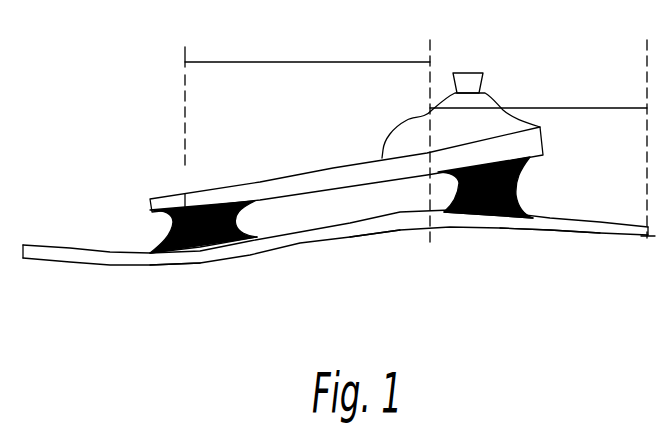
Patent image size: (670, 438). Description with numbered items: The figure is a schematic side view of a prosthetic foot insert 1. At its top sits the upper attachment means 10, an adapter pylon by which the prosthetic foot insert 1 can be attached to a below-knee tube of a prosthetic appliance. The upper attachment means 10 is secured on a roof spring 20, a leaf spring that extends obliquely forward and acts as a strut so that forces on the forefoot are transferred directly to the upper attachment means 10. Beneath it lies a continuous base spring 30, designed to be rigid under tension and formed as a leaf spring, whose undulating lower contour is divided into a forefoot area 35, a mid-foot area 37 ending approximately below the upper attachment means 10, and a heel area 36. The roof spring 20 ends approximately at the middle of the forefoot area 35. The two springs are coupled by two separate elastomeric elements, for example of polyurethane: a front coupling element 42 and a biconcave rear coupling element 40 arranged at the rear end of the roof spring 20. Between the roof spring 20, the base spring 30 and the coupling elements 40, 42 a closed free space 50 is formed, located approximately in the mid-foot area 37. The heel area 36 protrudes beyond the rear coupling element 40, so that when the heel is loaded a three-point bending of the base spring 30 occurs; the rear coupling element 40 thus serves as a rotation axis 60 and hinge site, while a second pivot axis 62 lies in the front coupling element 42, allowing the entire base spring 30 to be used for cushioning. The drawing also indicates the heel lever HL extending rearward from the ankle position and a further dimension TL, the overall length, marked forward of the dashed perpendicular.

The prosthetic foot insert 1 is at (214, 109).
The upper attachment means 10 is at (490, 95).
The roof spring 20 is at (317, 173).
The base spring 30 is at (350, 228).
The forefoot area 35 is at (188, 290).
The heel area 36 is at (552, 257).
The mid-foot area 37 is at (374, 254).
The rear coupling element 40 is at (515, 183).
The front coupling element 42 is at (167, 230).
The free space 50 is at (399, 195).
The rotation axis 60 is at (488, 218).
The second pivot axis 62 is at (205, 249).
The length dimension TL is at (302, 62).
The heel lever HL is at (572, 107).